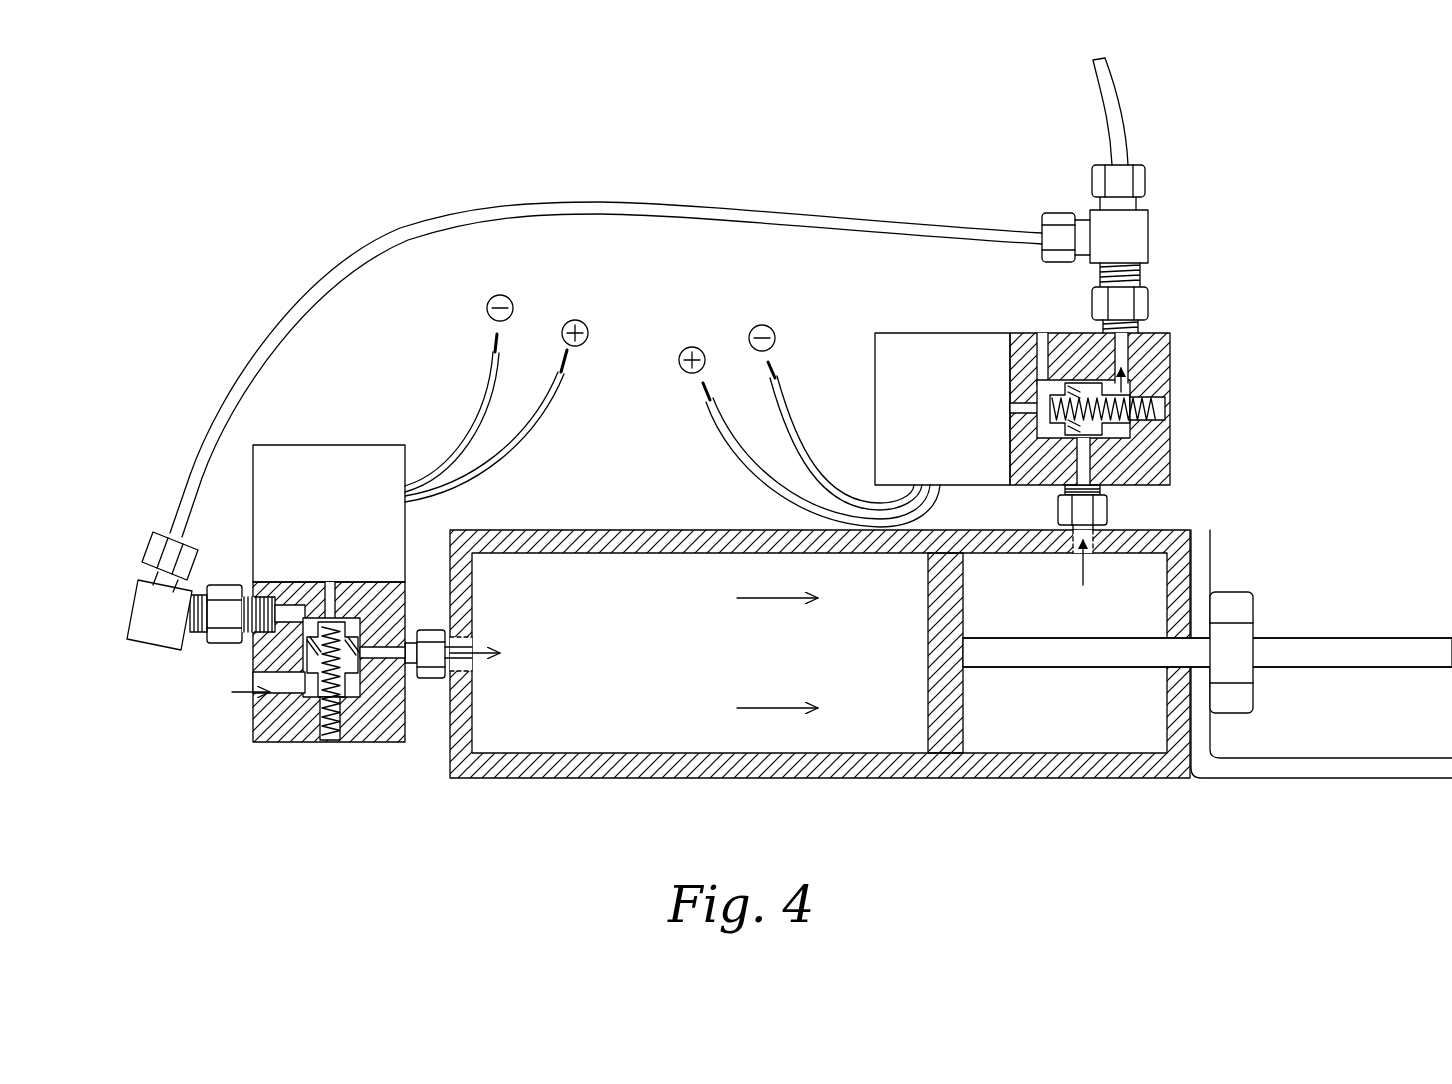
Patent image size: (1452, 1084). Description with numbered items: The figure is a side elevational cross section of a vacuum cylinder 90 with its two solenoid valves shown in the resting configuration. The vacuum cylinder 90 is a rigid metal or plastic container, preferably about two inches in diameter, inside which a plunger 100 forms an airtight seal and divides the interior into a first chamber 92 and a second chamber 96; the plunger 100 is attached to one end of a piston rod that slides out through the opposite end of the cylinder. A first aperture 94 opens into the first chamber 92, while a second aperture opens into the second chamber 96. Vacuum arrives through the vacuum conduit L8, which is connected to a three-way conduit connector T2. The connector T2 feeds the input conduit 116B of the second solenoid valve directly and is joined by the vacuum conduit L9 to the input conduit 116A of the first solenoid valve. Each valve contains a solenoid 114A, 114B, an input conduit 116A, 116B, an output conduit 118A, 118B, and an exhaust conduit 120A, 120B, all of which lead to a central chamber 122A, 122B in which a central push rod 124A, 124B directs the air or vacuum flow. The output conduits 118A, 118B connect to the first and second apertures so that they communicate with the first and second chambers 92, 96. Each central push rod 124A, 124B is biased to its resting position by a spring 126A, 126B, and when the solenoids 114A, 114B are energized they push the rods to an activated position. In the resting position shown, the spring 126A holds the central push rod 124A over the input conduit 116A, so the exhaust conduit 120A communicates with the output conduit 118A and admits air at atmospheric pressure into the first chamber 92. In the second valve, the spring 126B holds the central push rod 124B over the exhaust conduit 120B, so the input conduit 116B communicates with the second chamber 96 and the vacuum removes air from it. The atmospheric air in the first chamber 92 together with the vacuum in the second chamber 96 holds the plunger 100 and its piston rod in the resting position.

The vacuum cylinder 90 is at (551, 790).
The first chamber 92 is at (650, 668).
The first aperture 94 is at (470, 648).
The second chamber 96 is at (1080, 718).
The plunger 100 is at (965, 715).
The solenoid 114A is at (358, 527).
The input conduit 116A is at (287, 603).
The output conduit 118A is at (383, 653).
The exhaust conduit 120A is at (285, 697).
The central chamber 122A is at (305, 675).
The central push rod 124A is at (312, 665).
The spring 126A is at (333, 742).
The solenoid 114B is at (978, 423).
The input conduit 116B is at (1122, 370).
The output conduit 118B is at (1082, 463).
The exhaust conduit 120B is at (1045, 340).
The central chamber 122B is at (1092, 435).
The central push rod 124B is at (1023, 398).
The spring 126B is at (1167, 397).
The vacuum conduit L8 is at (1120, 100).
The vacuum conduit L9 is at (650, 205).
The three-way conduit connector T2 is at (1150, 238).